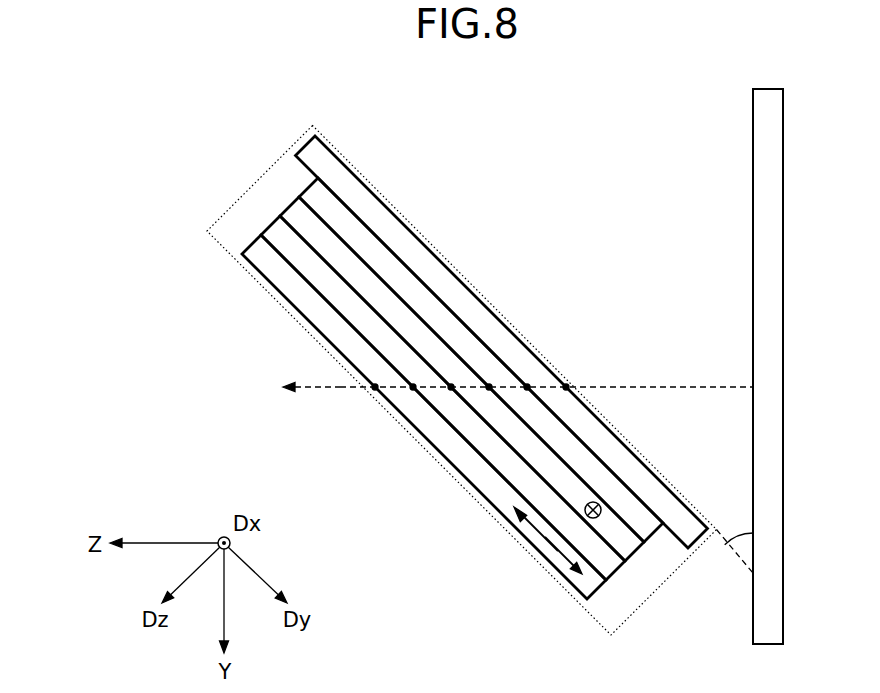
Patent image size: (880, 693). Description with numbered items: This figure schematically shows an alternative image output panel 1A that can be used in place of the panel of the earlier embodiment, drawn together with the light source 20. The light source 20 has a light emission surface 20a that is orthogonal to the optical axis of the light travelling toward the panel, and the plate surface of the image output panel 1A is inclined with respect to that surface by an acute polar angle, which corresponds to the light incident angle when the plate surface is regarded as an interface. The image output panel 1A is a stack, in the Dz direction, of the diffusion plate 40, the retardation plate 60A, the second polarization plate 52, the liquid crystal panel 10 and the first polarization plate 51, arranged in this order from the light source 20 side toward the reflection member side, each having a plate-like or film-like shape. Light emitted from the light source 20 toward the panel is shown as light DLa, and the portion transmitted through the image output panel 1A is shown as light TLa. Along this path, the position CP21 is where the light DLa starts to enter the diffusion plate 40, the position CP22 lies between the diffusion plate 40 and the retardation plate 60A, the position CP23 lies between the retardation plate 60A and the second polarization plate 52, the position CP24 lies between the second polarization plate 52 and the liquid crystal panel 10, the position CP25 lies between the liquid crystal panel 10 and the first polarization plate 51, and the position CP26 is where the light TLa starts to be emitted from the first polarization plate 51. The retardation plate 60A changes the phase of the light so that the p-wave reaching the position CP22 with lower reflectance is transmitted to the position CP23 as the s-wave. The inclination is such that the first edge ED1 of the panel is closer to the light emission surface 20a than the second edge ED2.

The image output panel 1A is at (222, 250).
The liquid crystal panel 10 is at (270, 228).
The light source 20 is at (775, 206).
The light emission surface 20a is at (753, 263).
The diffusion plate 40 is at (362, 180).
The first polarization plate 51 is at (246, 249).
The second polarization plate 52 is at (289, 208).
The retardation plate 60A is at (310, 184).
The position CP21 is at (567, 386).
The position CP22 is at (528, 386).
The position CP23 is at (490, 386).
The position CP24 is at (450, 388).
The position CP25 is at (412, 388).
The position CP26 is at (375, 388).
The light TLa is at (328, 387).
The light DLa is at (644, 388).
The first edge ED1 is at (680, 607).
The second edge ED2 is at (281, 120).